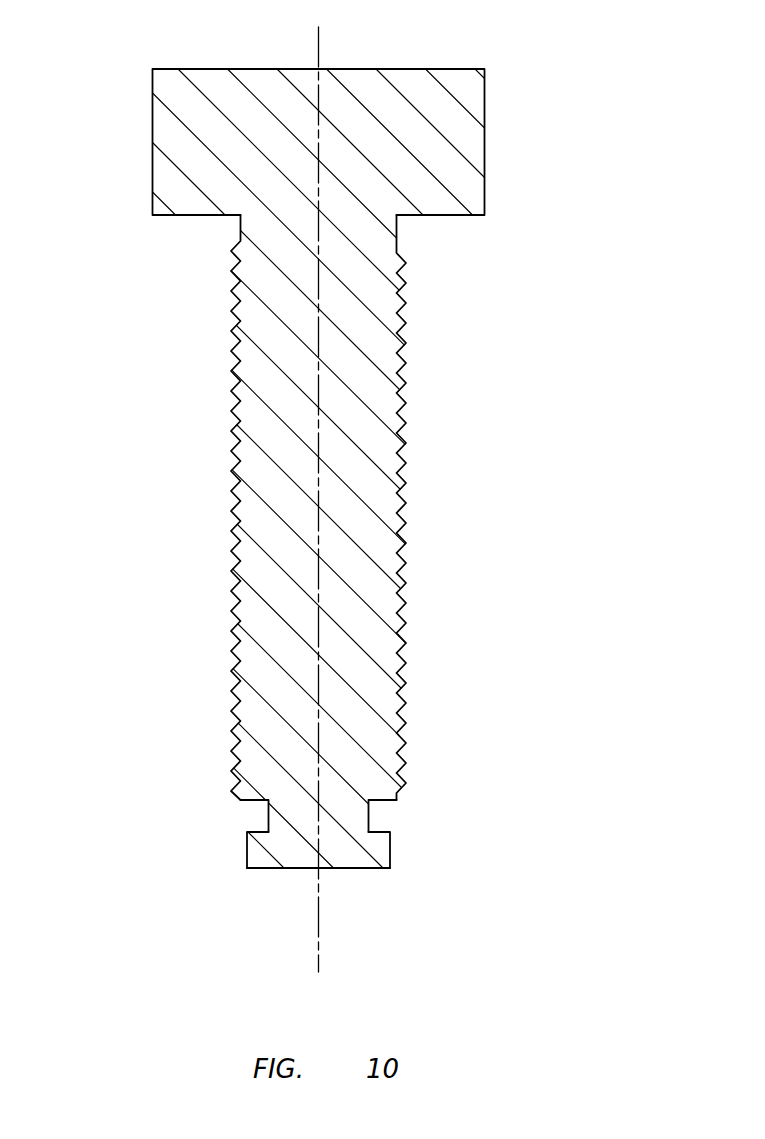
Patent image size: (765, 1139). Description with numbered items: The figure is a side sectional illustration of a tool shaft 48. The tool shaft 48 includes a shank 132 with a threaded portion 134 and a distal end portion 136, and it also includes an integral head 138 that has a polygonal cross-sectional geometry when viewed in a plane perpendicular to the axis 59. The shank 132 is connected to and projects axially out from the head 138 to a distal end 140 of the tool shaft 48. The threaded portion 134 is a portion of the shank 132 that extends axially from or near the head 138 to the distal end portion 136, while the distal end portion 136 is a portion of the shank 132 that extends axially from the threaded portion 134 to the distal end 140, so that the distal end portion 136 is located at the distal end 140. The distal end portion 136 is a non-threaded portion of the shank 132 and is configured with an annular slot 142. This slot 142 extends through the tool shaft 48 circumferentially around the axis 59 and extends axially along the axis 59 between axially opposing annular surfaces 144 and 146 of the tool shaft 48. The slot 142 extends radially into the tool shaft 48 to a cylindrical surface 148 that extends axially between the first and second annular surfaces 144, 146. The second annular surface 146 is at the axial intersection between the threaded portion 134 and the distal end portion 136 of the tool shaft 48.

The tool shaft 48 is at (349, 487).
The head 138 is at (494, 119).
The shank 132 is at (332, 507).
The threaded portion 134 is at (198, 245).
The distal end portion 136 is at (273, 855).
The annular slot 142 is at (265, 812).
The cylindrical surface 148 is at (249, 825).
The distal end 140 is at (375, 869).
The first annular surface 144 is at (383, 830).
The second annular surface 146 is at (388, 803).
The axis 59 is at (320, 955).